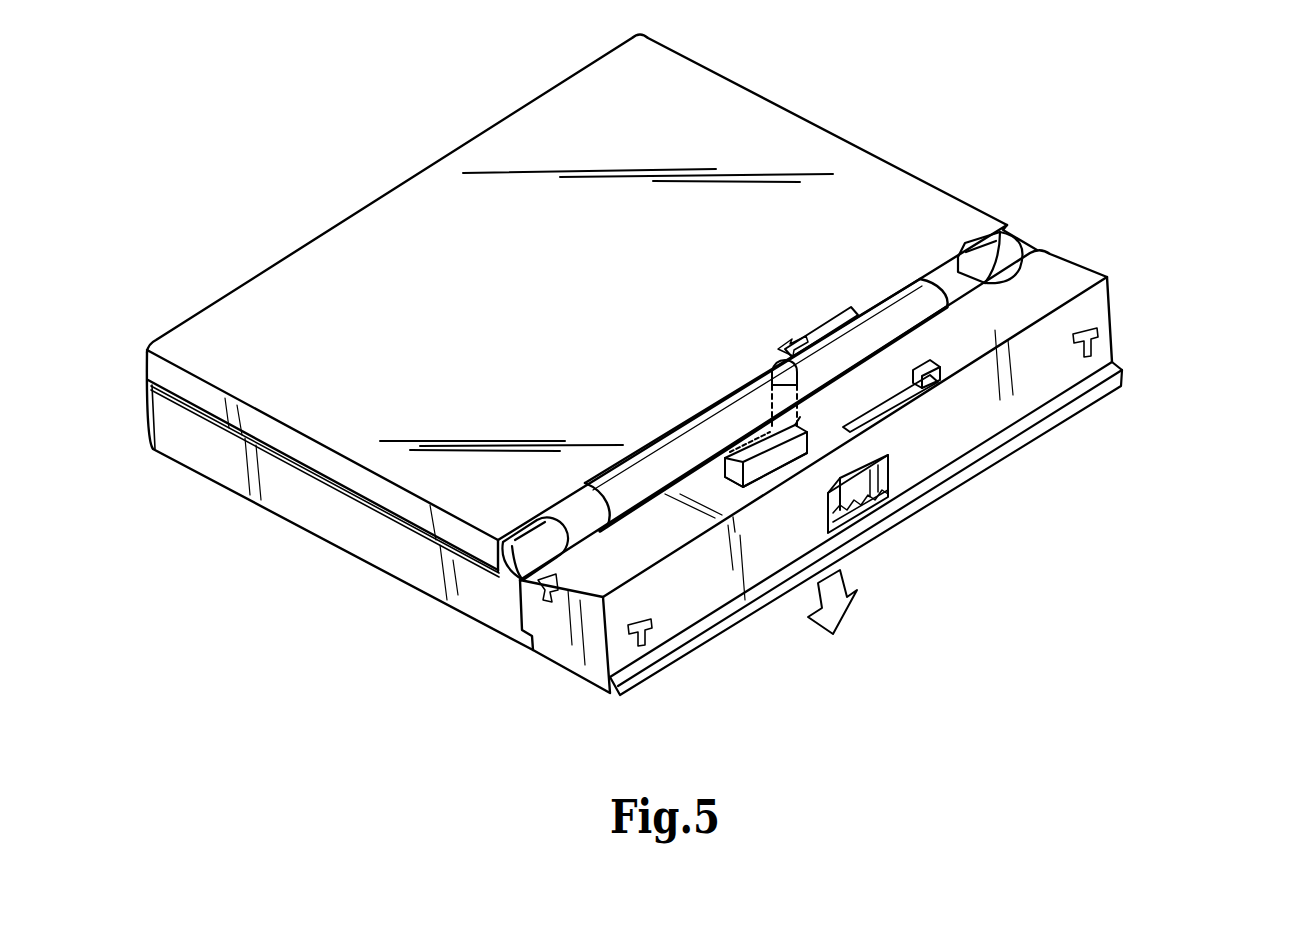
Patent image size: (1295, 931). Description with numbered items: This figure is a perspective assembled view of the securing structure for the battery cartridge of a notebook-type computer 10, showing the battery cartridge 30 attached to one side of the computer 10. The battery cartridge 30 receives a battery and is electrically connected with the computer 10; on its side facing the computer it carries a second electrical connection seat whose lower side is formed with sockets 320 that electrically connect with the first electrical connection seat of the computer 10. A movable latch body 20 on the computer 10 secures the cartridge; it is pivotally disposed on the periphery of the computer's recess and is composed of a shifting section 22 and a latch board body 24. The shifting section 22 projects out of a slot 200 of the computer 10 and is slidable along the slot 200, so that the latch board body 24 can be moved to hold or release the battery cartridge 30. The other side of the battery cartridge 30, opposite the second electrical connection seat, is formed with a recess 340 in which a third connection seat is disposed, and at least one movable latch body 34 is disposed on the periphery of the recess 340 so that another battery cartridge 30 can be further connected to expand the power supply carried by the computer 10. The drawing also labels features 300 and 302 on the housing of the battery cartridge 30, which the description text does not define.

The notebook-type computer 10 is at (901, 203).
The movable latch body 20 is at (764, 450).
The shifting section 22 is at (773, 360).
The latch board body 24 is at (764, 478).
The slot 200 is at (853, 309).
The battery cartridge 30 is at (1050, 274).
The hooks 300 is at (1095, 341).
The bottom plate 302 is at (683, 643).
The movable latch body 34 is at (935, 373).
The sockets 320 is at (850, 508).
The recess 340 is at (877, 500).